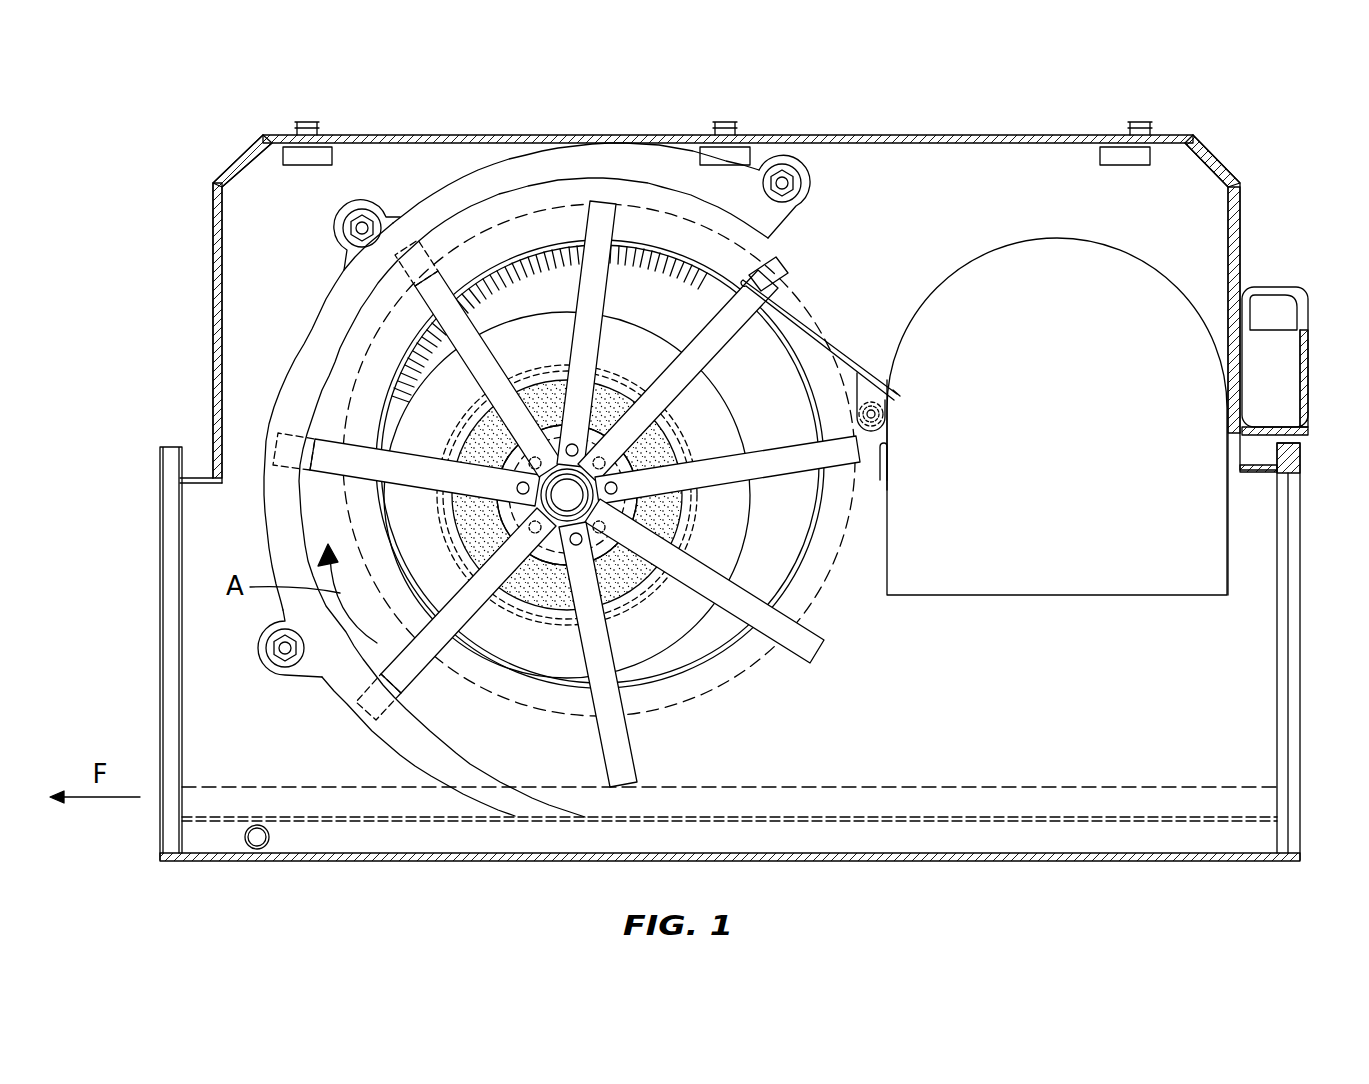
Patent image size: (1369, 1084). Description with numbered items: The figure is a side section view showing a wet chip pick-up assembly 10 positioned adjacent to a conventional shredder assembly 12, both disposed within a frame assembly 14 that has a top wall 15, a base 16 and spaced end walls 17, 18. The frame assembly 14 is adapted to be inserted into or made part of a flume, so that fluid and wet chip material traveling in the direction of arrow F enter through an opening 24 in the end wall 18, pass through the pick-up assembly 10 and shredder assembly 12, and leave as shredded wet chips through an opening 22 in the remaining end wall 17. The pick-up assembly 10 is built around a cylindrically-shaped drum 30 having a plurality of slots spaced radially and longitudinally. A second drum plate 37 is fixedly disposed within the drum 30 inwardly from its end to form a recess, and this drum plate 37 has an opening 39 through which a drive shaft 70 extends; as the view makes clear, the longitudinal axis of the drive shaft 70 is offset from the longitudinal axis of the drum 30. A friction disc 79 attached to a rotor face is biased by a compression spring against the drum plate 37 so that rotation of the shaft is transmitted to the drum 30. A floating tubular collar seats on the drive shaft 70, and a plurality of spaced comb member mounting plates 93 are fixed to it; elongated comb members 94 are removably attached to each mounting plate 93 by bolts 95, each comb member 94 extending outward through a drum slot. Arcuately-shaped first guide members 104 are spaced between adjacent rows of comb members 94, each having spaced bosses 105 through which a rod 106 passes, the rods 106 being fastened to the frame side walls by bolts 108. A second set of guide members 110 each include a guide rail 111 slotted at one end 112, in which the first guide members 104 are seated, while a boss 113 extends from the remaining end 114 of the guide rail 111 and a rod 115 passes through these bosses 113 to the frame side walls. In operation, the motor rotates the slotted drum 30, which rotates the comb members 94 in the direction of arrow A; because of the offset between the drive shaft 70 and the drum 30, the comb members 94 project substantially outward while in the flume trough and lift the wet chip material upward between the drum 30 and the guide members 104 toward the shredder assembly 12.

The wet chip pick-up assembly 10 is at (525, 245).
The shredder assembly 12 is at (1165, 283).
The frame assembly 14 is at (913, 134).
The top wall 15 is at (620, 135).
The base 16 is at (450, 860).
The end wall 17 is at (213, 322).
The end wall 18 is at (1243, 253).
The opening 22 is at (160, 583).
The opening 24 is at (1300, 583).
The drum 30 is at (697, 694).
The second drum plate 37 is at (780, 560).
The opening 39 is at (720, 393).
The drive shaft 70 is at (548, 542).
The friction disc 79 is at (660, 440).
The comb member mounting plate 93 is at (545, 380).
The comb member 94 is at (610, 258).
The bolt 95 is at (530, 527).
The first guide member 104 is at (455, 190).
The boss 105 is at (340, 248).
The rod 106 is at (362, 215).
The bolt 108 is at (343, 227).
The second guide member 110 is at (822, 342).
The guide rail 111 is at (860, 365).
The slotted end 112 is at (766, 270).
The boss 113 is at (885, 410).
The remaining end 114 is at (899, 391).
The rod 115 is at (883, 442).